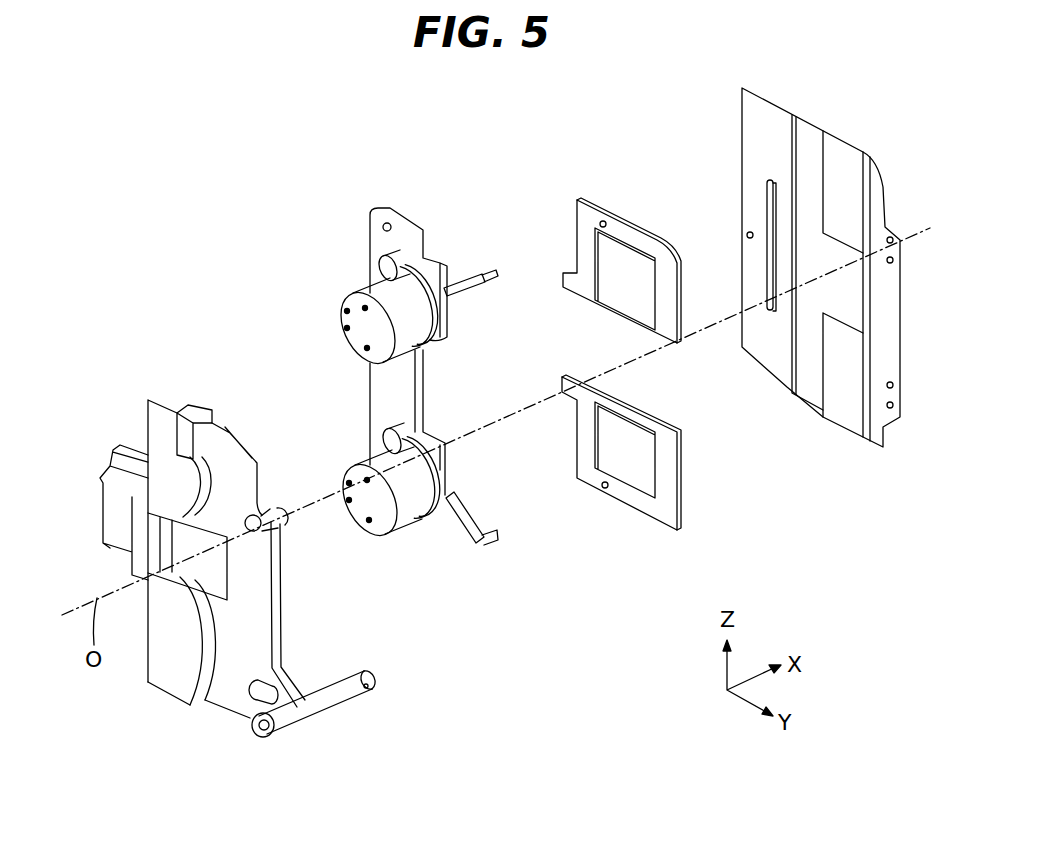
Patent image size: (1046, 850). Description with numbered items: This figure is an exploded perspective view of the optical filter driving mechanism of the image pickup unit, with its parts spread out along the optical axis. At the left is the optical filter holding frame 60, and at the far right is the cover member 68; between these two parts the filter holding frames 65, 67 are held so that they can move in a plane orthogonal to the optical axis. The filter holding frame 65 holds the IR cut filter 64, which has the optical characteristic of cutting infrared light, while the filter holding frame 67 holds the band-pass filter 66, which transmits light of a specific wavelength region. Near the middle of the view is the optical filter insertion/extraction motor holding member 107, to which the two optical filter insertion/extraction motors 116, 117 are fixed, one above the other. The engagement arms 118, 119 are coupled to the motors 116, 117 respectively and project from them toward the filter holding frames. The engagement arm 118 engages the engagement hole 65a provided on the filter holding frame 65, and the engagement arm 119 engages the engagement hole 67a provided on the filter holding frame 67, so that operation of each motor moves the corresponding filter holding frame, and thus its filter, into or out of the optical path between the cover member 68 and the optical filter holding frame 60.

The optical filter holding frame 60 is at (318, 724).
The IR cut filter 64 is at (612, 292).
The filter holding frame 65 is at (636, 225).
The engagement hole 65a is at (603, 220).
The band-pass filter 66 is at (643, 430).
The filter holding frame 67 is at (645, 520).
The engagement hole 67a is at (604, 492).
The cover member 68 is at (836, 418).
The optical filter insertion/extraction motor holding member 107 is at (370, 393).
The optical filter insertion/extraction motor 116 is at (355, 292).
The optical filter insertion/extraction motor 117 is at (388, 535).
The engagement arm 118 is at (487, 267).
The engagement arm 119 is at (490, 543).